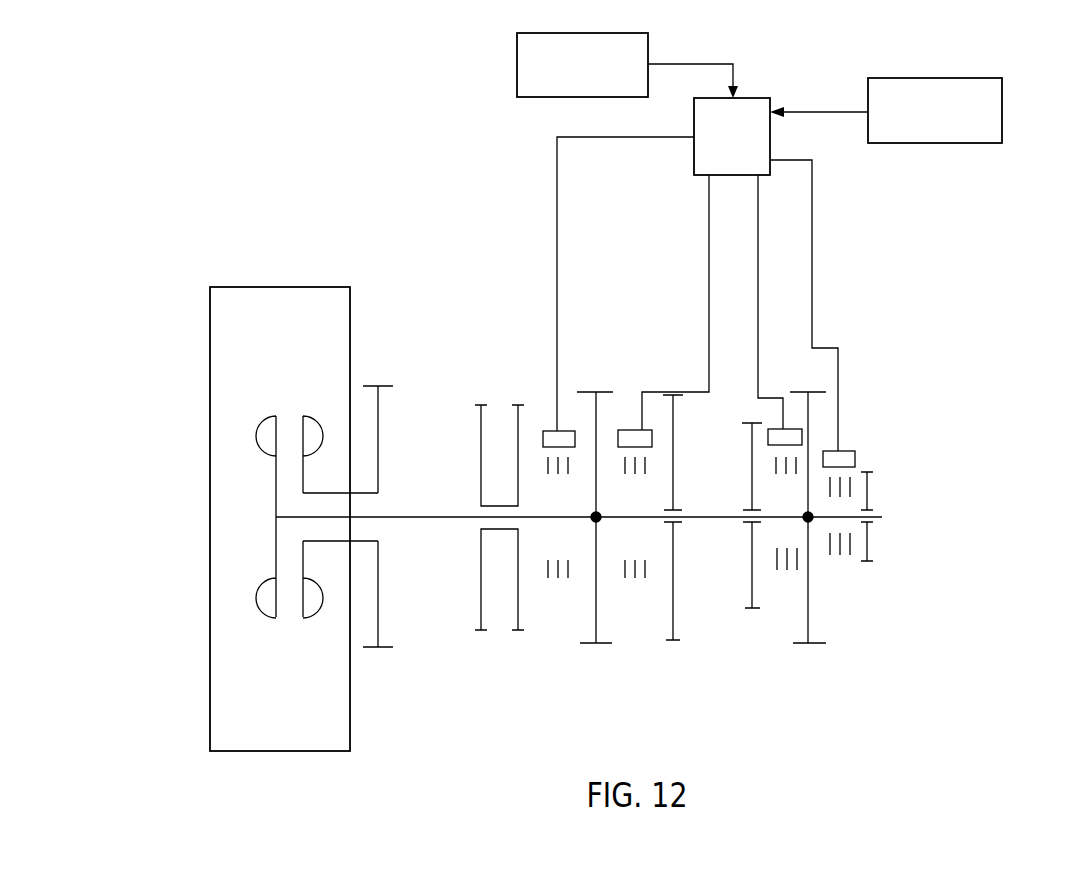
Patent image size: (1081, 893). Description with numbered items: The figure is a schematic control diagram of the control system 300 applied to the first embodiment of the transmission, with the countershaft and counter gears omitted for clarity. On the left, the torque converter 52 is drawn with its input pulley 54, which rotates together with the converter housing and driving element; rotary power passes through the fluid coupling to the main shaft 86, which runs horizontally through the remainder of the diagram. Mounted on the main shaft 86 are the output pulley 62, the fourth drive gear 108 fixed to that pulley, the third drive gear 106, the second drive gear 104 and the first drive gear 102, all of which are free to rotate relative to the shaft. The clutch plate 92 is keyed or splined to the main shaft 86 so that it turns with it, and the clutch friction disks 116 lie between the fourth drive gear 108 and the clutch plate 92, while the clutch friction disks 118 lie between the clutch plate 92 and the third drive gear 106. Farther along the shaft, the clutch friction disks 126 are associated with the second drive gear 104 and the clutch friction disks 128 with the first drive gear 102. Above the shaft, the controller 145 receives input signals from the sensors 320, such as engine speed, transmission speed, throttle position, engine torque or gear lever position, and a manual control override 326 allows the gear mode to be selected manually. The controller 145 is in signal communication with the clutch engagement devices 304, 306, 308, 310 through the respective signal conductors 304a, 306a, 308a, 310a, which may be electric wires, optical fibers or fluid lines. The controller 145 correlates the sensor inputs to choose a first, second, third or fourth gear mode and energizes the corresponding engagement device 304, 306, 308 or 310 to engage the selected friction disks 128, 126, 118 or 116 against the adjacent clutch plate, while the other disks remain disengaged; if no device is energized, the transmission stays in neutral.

The torque converter 52 is at (233, 280).
The input pulley 54 is at (374, 386).
The output pulley 62 is at (480, 405).
The main shaft 86 is at (418, 520).
The clutch plate 92 is at (603, 645).
The first drive gear 102 is at (867, 563).
The second drive gear 104 is at (750, 610).
The third drive gear 106 is at (675, 642).
The fourth drive gear 108 is at (517, 630).
The clutch friction disks 116 is at (560, 590).
The clutch friction disks 118 is at (637, 590).
The clutch friction disks 126 is at (787, 583).
The clutch friction disks 128 is at (836, 560).
The controller 145 is at (732, 136).
The control system 300 is at (924, 243).
The clutch engagement device 304 is at (843, 450).
The signal conductor 304a is at (812, 307).
The clutch engagement device 306 is at (778, 428).
The signal conductor 306a is at (758, 237).
The clutch engagement device 308 is at (628, 430).
The signal conductor 308a is at (709, 222).
The clutch engagement device 310 is at (548, 431).
The signal conductor 310a is at (557, 237).
The sensors 320 is at (1002, 103).
The manual control override 326 is at (517, 64).